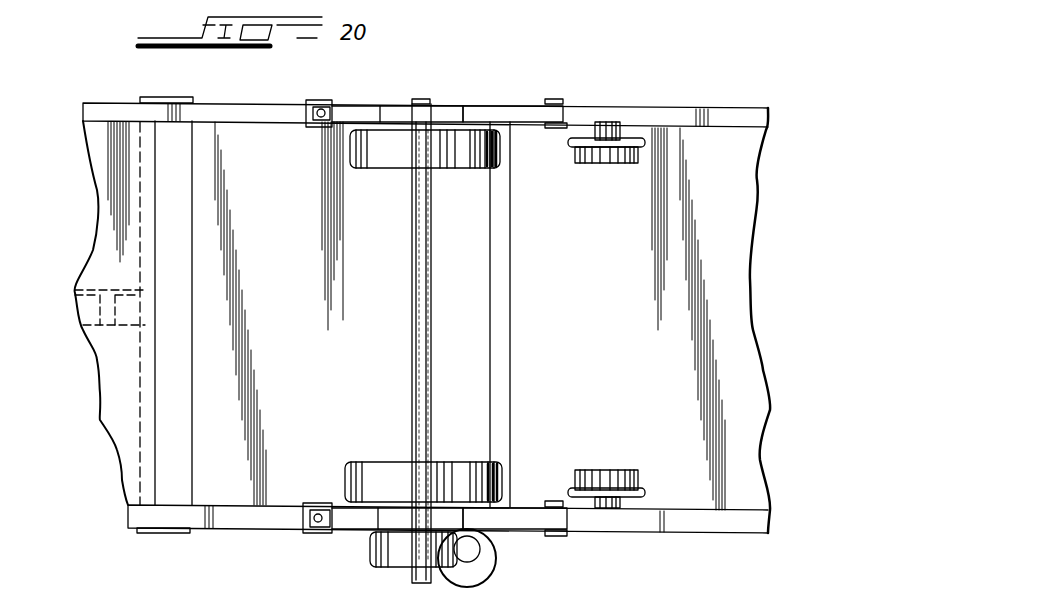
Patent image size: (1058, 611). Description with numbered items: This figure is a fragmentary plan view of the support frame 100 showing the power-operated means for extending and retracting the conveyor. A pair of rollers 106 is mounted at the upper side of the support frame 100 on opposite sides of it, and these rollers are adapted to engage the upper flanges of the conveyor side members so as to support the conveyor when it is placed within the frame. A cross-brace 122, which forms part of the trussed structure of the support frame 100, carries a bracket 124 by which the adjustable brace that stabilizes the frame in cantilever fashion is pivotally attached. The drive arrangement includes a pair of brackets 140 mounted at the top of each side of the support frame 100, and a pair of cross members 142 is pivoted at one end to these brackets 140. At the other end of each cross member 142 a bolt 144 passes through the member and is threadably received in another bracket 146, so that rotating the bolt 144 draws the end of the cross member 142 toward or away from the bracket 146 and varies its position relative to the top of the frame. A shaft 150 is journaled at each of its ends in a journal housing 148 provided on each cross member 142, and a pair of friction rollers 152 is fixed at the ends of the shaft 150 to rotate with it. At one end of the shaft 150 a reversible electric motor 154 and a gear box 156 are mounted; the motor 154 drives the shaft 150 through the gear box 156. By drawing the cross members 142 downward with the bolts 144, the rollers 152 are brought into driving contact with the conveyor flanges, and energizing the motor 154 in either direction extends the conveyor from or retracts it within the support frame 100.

The support frame 100 is at (700, 94).
The rollers 106 is at (607, 163).
The cross-brace 122 is at (140, 463).
The bracket 124 is at (100, 327).
The brackets 140 is at (567, 103).
The cross members 142 is at (516, 84).
The bolt 144 is at (327, 112).
The bracket 146 is at (320, 100).
The journal housing 148 is at (397, 113).
The shaft 150 is at (412, 287).
The friction rollers 152 is at (397, 160).
The electric motor 154 is at (497, 567).
The gear box 156 is at (393, 555).